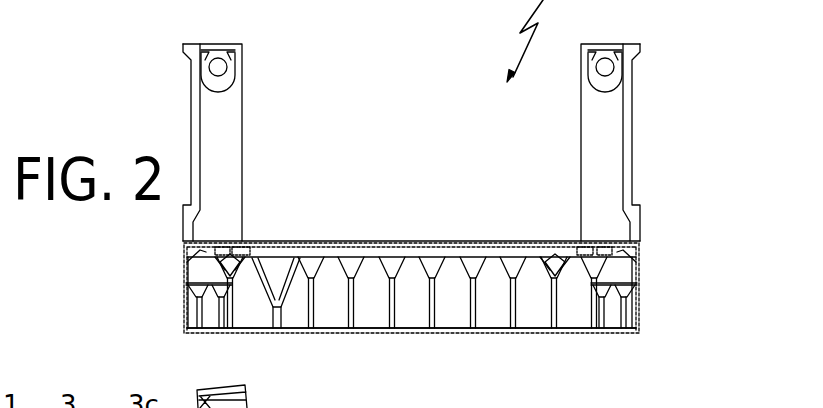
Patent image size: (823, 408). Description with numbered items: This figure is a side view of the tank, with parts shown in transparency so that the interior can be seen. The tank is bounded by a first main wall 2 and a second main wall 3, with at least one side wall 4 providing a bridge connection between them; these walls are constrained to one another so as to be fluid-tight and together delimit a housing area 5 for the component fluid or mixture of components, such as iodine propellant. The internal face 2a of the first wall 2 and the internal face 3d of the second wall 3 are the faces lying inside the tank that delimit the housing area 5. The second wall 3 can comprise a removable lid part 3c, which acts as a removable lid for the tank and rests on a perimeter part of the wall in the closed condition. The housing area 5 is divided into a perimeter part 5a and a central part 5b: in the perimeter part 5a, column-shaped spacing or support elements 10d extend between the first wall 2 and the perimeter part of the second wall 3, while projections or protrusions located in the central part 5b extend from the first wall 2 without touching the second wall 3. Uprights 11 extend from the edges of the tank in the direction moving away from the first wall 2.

The first main wall 2 is at (438, 335).
The internal face of the first wall 2a is at (383, 326).
The second main wall 3 is at (413, 242).
The removable lid part 3c is at (292, 241).
The internal face of the second wall 3d is at (454, 280).
The side wall 4 is at (30, 0).
The housing area 5 is at (543, 326).
The perimeter part of the housing area 5a is at (193, 313).
The central part of the housing area 5b is at (414, 303).
The spacing or support elements 10d is at (356, 293).
The uprights 11 is at (236, 125).